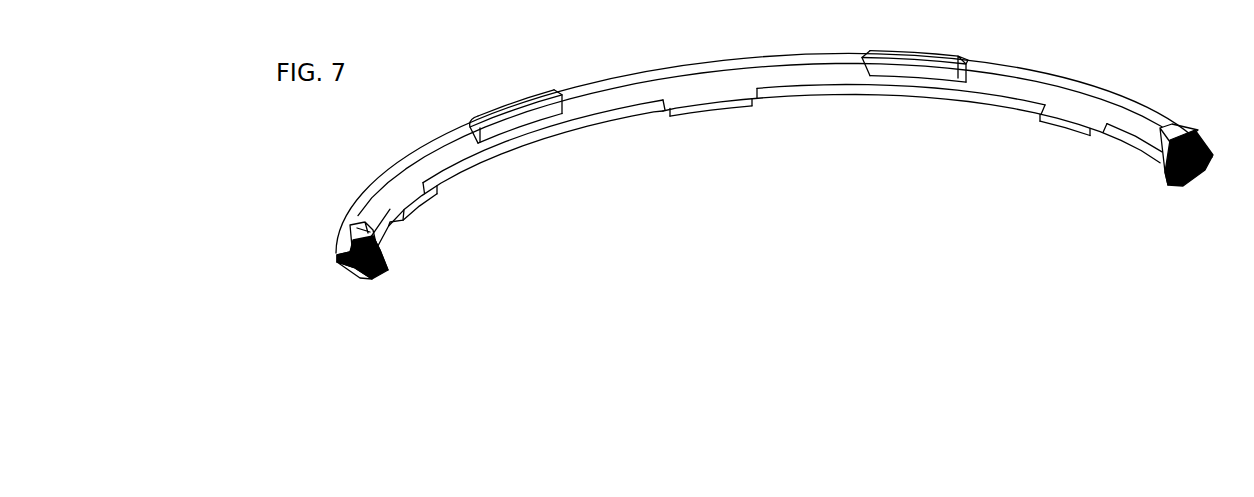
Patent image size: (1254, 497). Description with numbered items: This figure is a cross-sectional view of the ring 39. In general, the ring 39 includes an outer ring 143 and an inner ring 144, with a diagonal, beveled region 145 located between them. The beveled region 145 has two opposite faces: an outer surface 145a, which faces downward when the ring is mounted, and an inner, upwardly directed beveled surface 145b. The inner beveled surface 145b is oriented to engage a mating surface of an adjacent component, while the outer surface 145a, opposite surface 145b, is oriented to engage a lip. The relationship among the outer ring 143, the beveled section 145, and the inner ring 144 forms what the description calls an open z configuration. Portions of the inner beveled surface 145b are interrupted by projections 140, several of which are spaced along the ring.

The ring 39 is at (550, 172).
The projections 140 is at (507, 107).
The outer ring 143 is at (332, 257).
The inner ring 144 is at (387, 272).
The beveled region 145 is at (372, 279).
The outer beveled surface 145a is at (355, 267).
The inner beveled surface 145b is at (432, 162).